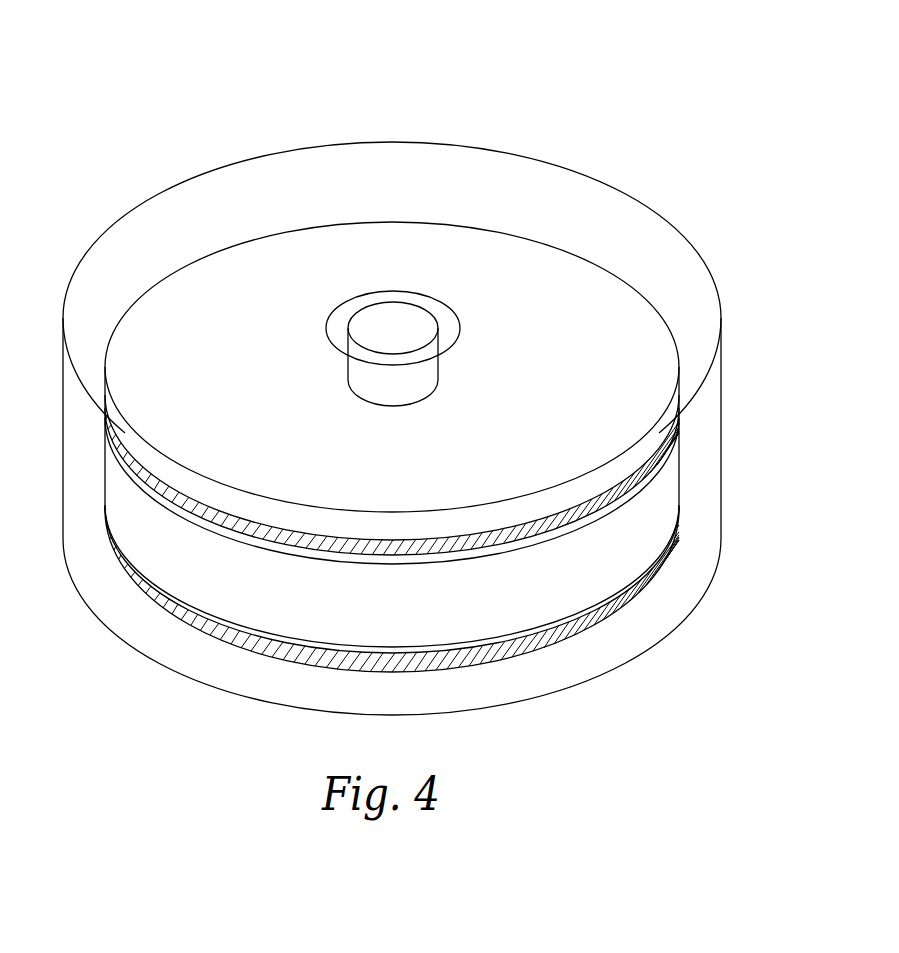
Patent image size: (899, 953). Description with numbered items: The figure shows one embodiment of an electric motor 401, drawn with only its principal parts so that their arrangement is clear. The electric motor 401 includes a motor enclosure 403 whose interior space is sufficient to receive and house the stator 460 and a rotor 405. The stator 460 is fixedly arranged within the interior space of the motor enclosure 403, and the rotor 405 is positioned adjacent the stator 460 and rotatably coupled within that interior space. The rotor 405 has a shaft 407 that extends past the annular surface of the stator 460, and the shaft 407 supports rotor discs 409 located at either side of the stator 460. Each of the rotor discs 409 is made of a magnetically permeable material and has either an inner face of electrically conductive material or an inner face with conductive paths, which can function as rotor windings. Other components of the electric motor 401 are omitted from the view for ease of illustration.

The electric motor 401 is at (140, 75).
The motor enclosure 403 is at (722, 418).
The rotor 405 is at (542, 325).
The shaft 407 is at (370, 338).
The rotor discs 409 is at (363, 421).
The stator 460 is at (650, 500).